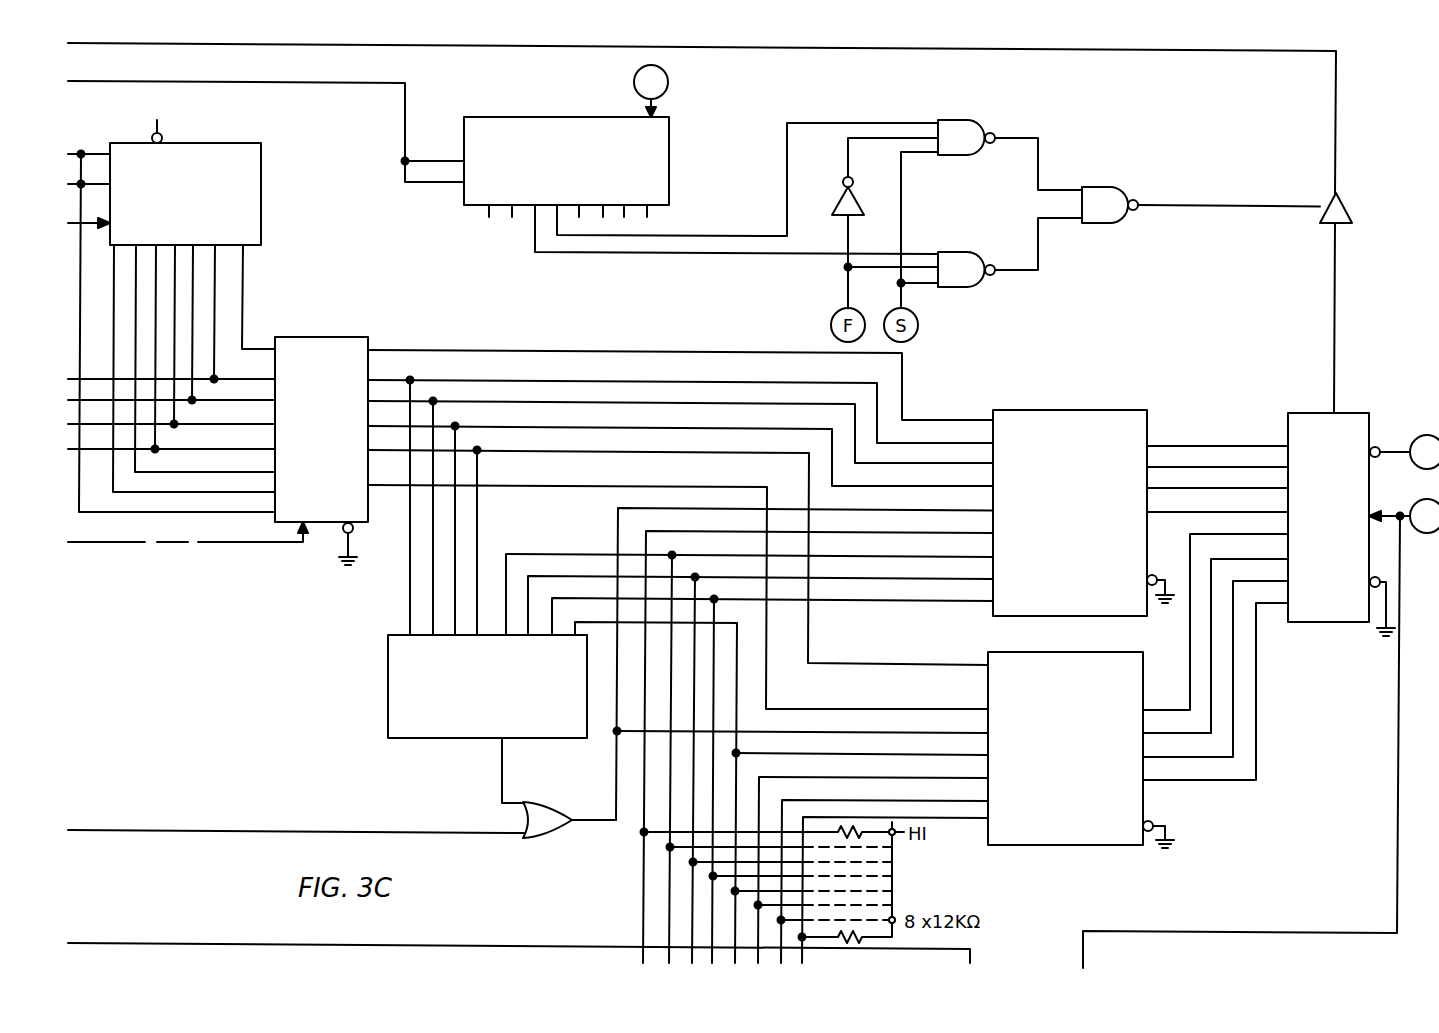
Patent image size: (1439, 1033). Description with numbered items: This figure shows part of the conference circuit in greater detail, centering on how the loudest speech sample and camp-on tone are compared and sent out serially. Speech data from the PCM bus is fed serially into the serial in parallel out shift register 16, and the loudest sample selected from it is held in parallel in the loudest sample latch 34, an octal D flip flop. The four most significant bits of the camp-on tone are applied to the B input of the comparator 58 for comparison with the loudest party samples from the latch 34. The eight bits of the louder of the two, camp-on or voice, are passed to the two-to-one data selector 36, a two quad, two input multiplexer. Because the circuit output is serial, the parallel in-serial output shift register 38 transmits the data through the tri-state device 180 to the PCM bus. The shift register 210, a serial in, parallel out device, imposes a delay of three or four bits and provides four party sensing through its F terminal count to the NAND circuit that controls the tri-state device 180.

The serial in parallel out shift register 16 is at (261, 208).
The shift register 210 is at (669, 150).
The loudest sample latch 34 is at (318, 337).
The two-to-one data selector 36 is at (1080, 410).
The parallel in-serial output shift register 38 is at (1350, 413).
The comparator 58 is at (453, 738).
The tri-state device 180 is at (1350, 210).